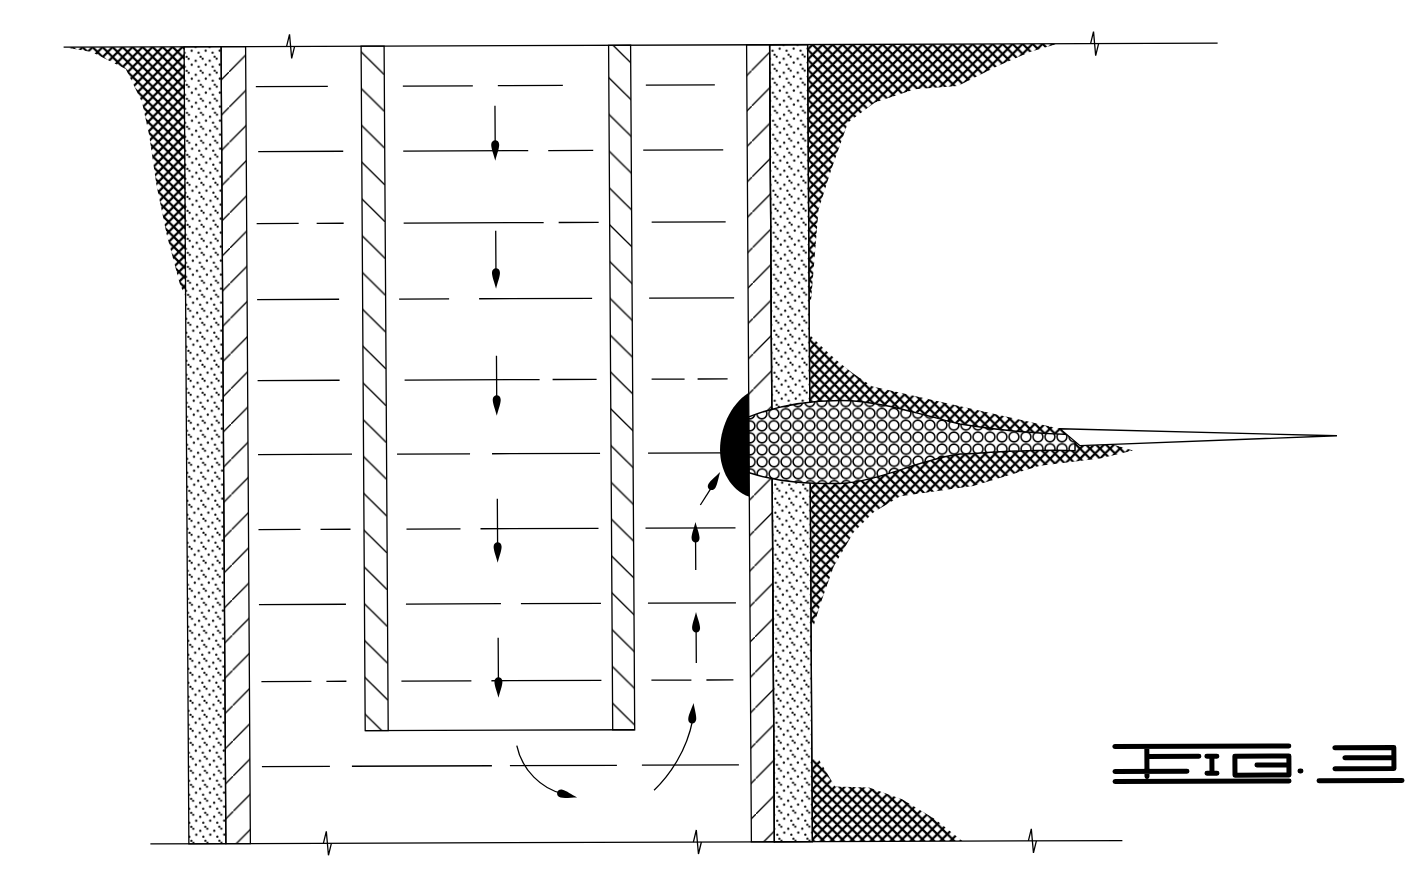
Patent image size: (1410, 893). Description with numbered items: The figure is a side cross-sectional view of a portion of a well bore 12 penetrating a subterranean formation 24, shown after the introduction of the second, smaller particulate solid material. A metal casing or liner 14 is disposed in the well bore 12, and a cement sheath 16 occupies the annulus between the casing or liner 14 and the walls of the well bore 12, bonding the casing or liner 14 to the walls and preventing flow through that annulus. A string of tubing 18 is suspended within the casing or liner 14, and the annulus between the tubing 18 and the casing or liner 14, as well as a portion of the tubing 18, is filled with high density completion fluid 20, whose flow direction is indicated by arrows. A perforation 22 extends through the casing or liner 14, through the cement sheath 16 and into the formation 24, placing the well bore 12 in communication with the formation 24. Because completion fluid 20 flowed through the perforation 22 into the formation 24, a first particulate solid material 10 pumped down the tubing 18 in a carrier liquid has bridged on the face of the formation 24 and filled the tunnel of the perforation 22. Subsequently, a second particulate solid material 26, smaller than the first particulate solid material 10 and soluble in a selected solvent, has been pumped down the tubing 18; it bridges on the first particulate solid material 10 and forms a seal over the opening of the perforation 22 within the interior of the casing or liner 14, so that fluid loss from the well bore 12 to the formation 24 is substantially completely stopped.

The first particulate solid material 10 is at (878, 382).
The well bore 12 is at (798, 263).
The casing or liner 14 is at (762, 40).
The cement sheath 16 is at (793, 50).
The tubing 18 is at (622, 44).
The high density completion fluid 20 is at (695, 38).
The perforation 22 is at (976, 407).
The subterranean formation 24 is at (1170, 242).
The second particulate solid material 26 is at (733, 421).